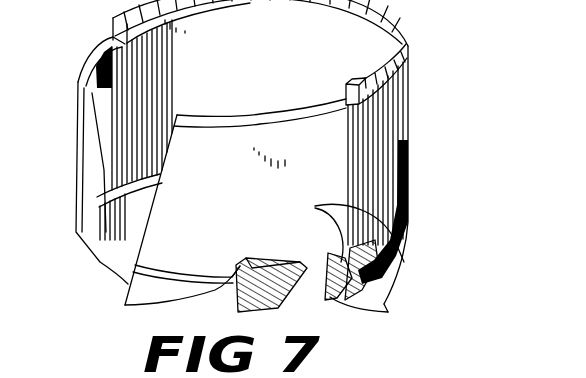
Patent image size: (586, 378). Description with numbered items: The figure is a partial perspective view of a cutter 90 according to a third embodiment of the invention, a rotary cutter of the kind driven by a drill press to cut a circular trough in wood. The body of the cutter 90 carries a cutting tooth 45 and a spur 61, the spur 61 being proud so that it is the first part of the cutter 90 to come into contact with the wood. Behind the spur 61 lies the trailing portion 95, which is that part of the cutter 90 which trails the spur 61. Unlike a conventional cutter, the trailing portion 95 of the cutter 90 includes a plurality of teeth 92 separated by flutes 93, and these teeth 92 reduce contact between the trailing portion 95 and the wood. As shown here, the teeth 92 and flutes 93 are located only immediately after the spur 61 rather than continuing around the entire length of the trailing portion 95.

The cutter 90 is at (72, 63).
The cutting tooth 45 is at (146, 307).
The spur 61 is at (265, 278).
The trailing portion 95 is at (320, 258).
The flutes 93 is at (344, 248).
The teeth 92 is at (376, 312).